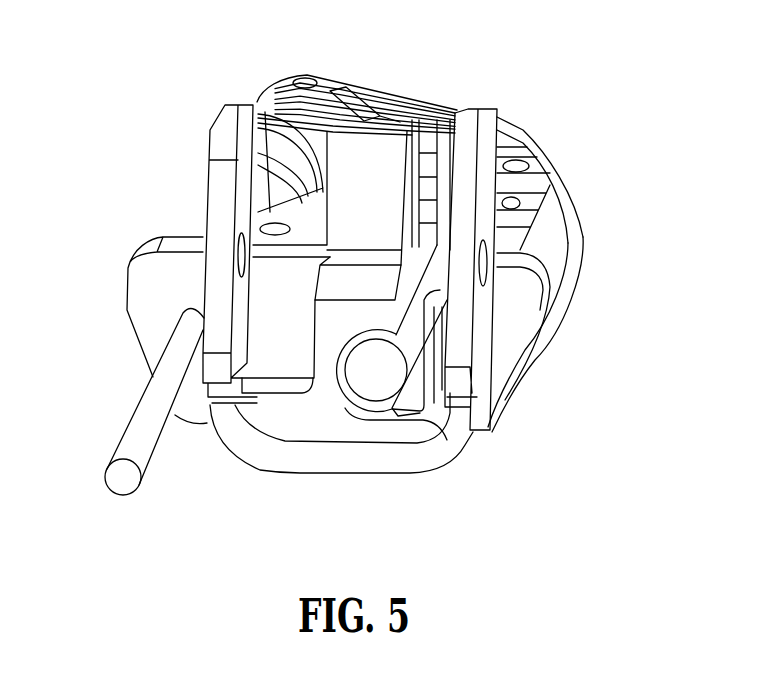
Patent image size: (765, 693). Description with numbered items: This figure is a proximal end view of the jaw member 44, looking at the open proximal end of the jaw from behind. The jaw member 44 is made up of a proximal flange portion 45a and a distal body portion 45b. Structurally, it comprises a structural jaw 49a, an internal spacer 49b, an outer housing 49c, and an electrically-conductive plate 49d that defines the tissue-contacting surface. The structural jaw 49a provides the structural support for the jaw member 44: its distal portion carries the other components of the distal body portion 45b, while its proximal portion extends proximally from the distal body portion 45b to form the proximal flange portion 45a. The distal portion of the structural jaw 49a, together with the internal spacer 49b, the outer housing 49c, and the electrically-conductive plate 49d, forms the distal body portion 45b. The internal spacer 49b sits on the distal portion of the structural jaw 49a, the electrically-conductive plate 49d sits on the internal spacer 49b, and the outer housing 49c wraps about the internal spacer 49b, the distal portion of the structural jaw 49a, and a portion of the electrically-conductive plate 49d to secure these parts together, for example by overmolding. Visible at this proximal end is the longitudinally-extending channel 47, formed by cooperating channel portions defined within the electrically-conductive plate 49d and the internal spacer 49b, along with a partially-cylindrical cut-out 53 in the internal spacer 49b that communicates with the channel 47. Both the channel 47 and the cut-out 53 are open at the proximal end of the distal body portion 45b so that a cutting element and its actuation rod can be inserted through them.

The jaw member 44 is at (152, 176).
The proximal flange portion 45a is at (502, 471).
The distal body portion 45b is at (514, 98).
The channel 47 is at (393, 120).
The structural jaw 49a is at (435, 456).
The internal spacer 49b is at (330, 323).
The outer housing 49c is at (578, 204).
The electrically-conductive plate 49d is at (537, 163).
The partially-cylindrical cut-out 53 is at (360, 373).